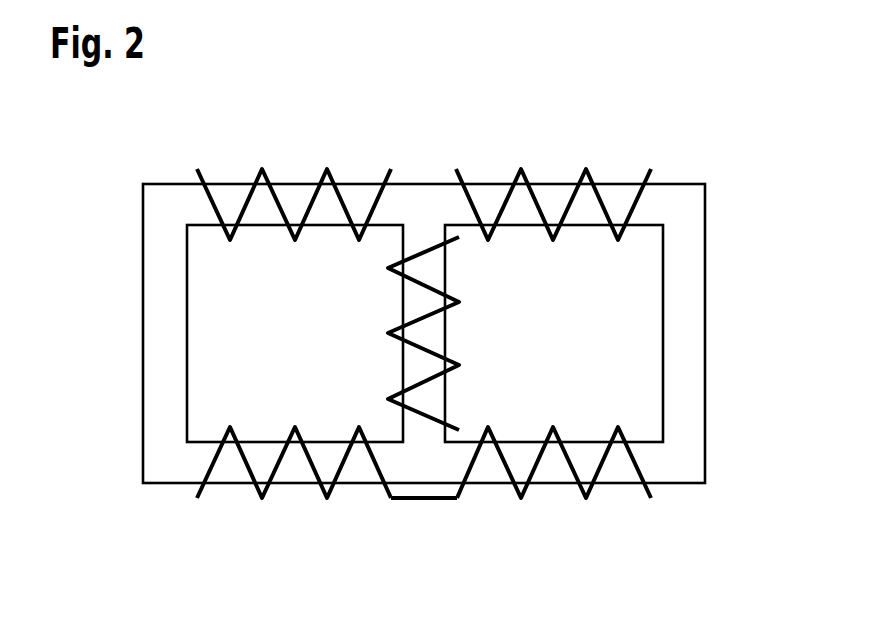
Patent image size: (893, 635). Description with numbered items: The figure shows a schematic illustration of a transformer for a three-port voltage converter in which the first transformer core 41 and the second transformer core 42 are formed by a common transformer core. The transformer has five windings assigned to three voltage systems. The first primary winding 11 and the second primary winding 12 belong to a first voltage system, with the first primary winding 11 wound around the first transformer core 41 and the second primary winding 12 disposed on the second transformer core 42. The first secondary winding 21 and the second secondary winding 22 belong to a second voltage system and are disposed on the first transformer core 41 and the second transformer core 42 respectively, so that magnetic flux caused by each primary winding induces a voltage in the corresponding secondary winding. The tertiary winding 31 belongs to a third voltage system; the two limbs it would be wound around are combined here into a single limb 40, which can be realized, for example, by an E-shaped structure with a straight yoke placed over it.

The first primary winding 11 is at (263, 173).
The second primary winding 12 is at (521, 173).
The first secondary winding 21 is at (262, 497).
The second secondary winding 22 is at (521, 497).
The tertiary winding 31 is at (423, 250).
The single limb 40 is at (423, 433).
The first transformer core 41 is at (163, 433).
The second transformer core 42 is at (685, 433).